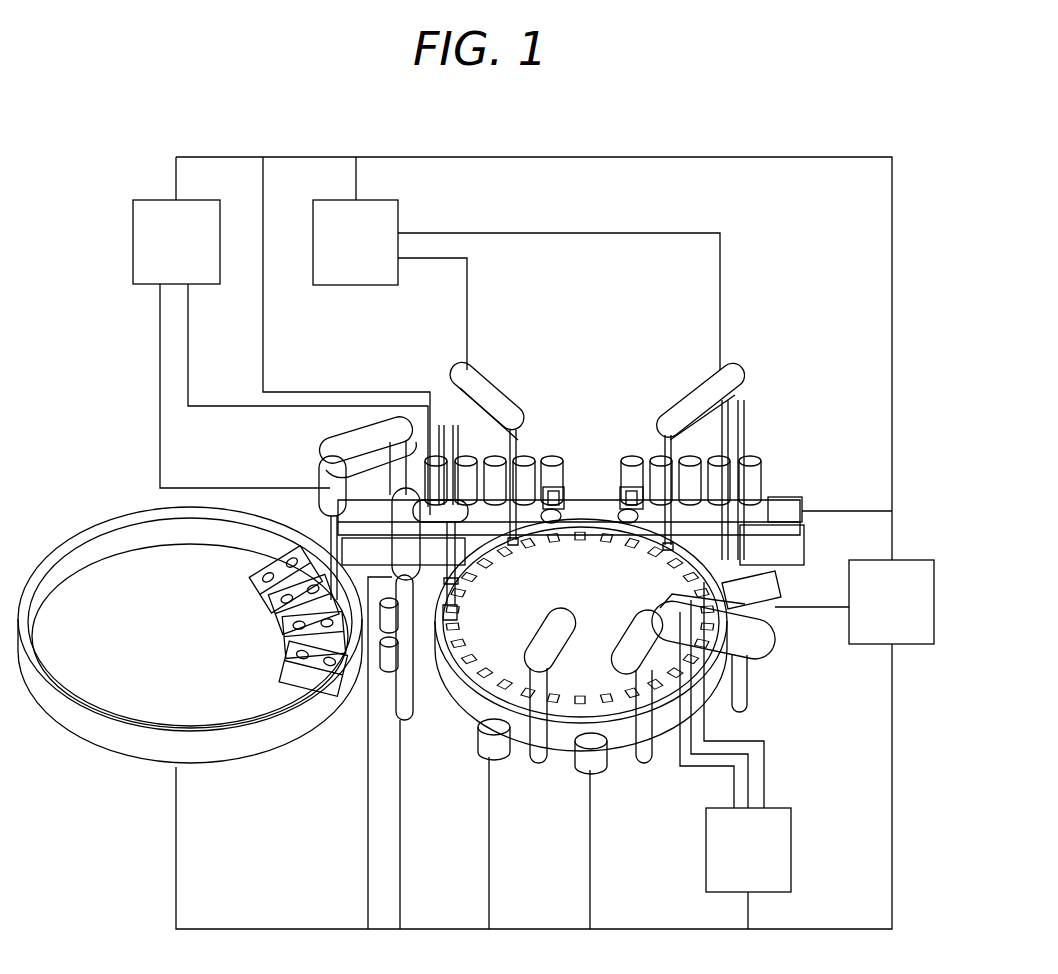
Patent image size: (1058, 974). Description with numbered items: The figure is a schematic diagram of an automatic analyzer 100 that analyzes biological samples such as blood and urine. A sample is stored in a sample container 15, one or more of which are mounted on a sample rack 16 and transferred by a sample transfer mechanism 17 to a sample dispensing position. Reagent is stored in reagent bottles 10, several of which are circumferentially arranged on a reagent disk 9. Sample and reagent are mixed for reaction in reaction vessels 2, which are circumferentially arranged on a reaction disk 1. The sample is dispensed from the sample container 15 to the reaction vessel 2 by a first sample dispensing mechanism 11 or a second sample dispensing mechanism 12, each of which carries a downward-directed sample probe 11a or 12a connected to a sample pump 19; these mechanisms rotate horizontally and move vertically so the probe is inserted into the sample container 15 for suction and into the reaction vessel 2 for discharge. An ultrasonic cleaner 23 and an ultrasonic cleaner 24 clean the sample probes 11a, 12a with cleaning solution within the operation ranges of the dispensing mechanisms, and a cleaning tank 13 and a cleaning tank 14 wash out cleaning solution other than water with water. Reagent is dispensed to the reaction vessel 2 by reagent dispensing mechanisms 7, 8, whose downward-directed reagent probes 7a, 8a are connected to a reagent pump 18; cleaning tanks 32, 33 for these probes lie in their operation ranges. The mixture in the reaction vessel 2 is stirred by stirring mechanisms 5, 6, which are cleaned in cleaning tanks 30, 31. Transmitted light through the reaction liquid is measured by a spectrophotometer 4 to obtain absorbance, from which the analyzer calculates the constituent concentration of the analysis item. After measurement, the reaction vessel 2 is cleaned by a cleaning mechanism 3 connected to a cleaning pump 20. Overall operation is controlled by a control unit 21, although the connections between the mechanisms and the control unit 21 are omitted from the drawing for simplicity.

The automatic analyzer 100 is at (88, 158).
The reaction disk 1 is at (458, 688).
The reaction vessel 2 is at (480, 677).
The cleaning mechanism 3 is at (755, 640).
The spectrophotometer 4 is at (765, 583).
The stirring mechanism 5 is at (540, 770).
The stirring mechanism 6 is at (645, 762).
The reagent dispensing mechanism 7 is at (417, 570).
The reagent probe 7a is at (450, 580).
The reagent dispensing mechanism 8 is at (339, 440).
The reagent probe 8a is at (330, 537).
The reagent disk 9 is at (113, 757).
The reagent bottle 10 is at (282, 662).
The first sample dispensing mechanism 11 is at (482, 383).
The sample probe 11a is at (538, 440).
The second sample dispensing mechanism 12 is at (733, 367).
The sample probe 12a is at (645, 437).
The cleaning tank 13 is at (551, 522).
The cleaning tank 14 is at (628, 522).
The sample container 15 is at (757, 476).
The sample rack 16 is at (762, 510).
The sample transfer mechanism 17 is at (792, 548).
The reagent pump 18 is at (137, 238).
The sample pump 19 is at (356, 285).
The cleaning pump 20 is at (783, 850).
The control unit 21 is at (912, 566).
The ultrasonic cleaner 23 is at (552, 498).
The ultrasonic cleaner 24 is at (630, 498).
The cleaning tank 30 is at (500, 762).
The cleaning tank 31 is at (600, 774).
The cleaning tank 32 is at (390, 674).
The cleaning tank 33 is at (388, 630).